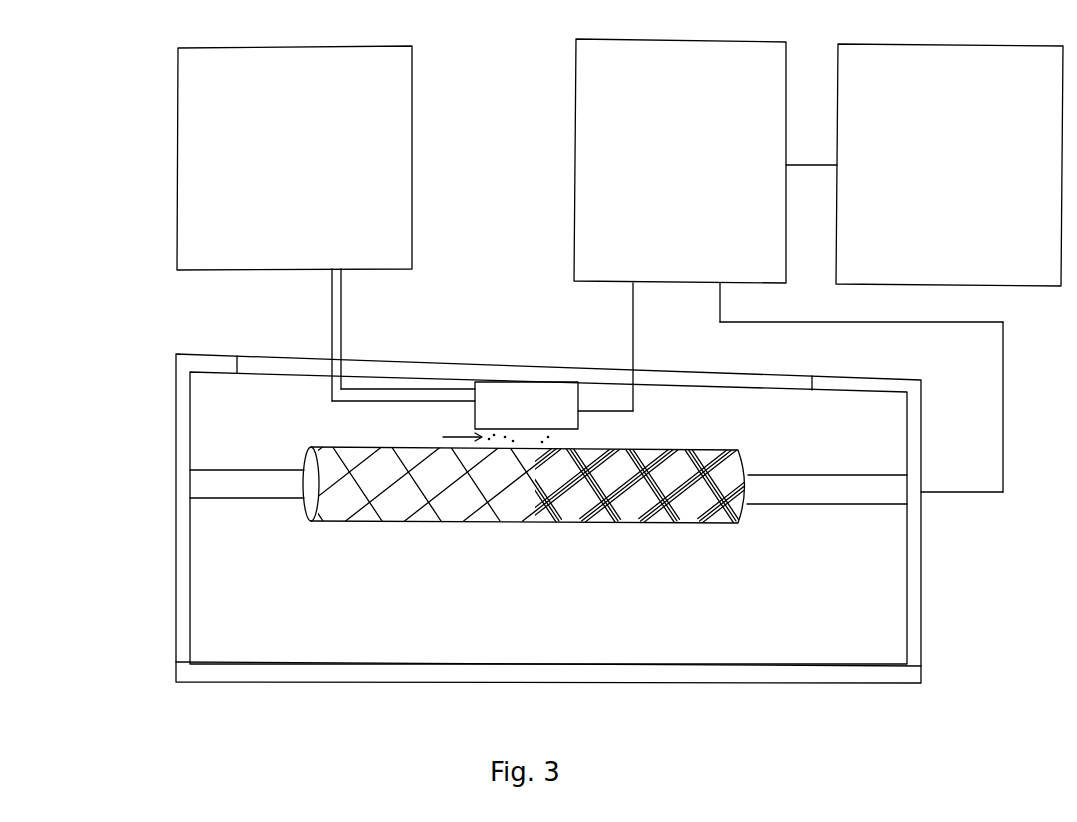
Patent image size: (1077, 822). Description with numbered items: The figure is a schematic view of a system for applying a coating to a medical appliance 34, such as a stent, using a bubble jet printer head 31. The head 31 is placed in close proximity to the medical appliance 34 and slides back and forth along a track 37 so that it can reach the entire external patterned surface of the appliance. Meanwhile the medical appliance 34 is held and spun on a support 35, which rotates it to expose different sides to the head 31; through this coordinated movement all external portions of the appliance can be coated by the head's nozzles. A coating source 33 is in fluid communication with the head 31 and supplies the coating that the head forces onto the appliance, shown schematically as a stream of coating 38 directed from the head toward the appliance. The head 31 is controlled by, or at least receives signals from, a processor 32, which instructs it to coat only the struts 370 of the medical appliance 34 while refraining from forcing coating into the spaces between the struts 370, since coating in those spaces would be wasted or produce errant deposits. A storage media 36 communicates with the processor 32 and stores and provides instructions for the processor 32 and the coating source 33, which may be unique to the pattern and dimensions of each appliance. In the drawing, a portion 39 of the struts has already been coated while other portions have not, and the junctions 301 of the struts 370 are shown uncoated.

The bubble jet printer head 31 is at (540, 426).
The processor 32 is at (667, 271).
The coating source 33 is at (258, 262).
The medical appliance 34 is at (468, 515).
The support 35 is at (268, 497).
The storage media 36 is at (995, 258).
The track 37 is at (396, 361).
The plasma / gas flow 38 is at (474, 427).
The coated portion of the struts 39 is at (665, 512).
The junctions of struts 301 is at (366, 506).
The struts 370 is at (501, 492).